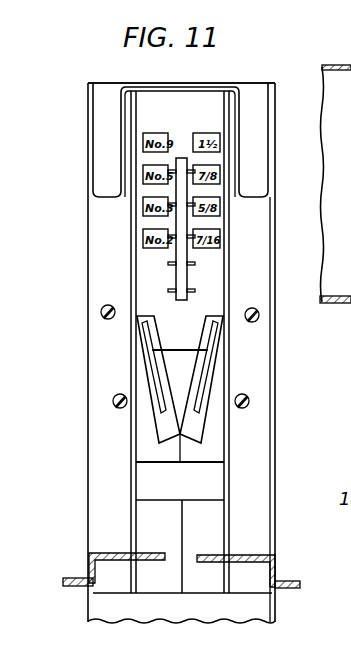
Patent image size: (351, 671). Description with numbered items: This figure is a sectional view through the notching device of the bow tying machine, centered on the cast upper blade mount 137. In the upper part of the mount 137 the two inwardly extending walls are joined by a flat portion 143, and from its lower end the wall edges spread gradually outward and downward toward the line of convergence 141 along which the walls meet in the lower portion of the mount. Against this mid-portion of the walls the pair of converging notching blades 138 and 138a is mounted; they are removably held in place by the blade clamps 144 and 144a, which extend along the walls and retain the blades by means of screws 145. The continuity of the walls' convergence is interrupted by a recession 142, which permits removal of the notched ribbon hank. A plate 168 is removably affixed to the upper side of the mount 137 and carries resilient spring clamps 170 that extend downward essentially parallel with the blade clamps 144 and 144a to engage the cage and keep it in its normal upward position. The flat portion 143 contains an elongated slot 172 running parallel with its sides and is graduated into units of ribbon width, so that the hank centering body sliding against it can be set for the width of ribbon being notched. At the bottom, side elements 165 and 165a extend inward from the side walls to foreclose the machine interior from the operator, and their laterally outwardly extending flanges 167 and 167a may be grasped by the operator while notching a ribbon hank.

The plate 168 is at (170, 82).
The upper blade mount 137 is at (187, 100).
The resilient spring clamps 170 is at (105, 136).
The blade clamp 144 is at (102, 222).
The blade clamp 144a is at (247, 255).
The flat portion 143 is at (150, 277).
The elongated slot 172 is at (181, 300).
The screws 145 is at (113, 395).
The notching blade 138 is at (162, 422).
The notching blade 138a is at (198, 425).
The recession 142 is at (163, 498).
The line of convergence 141 is at (182, 541).
The side element 165 is at (90, 557).
The flange 167 is at (77, 578).
The side element 165a is at (276, 567).
The flange 167a is at (290, 583).